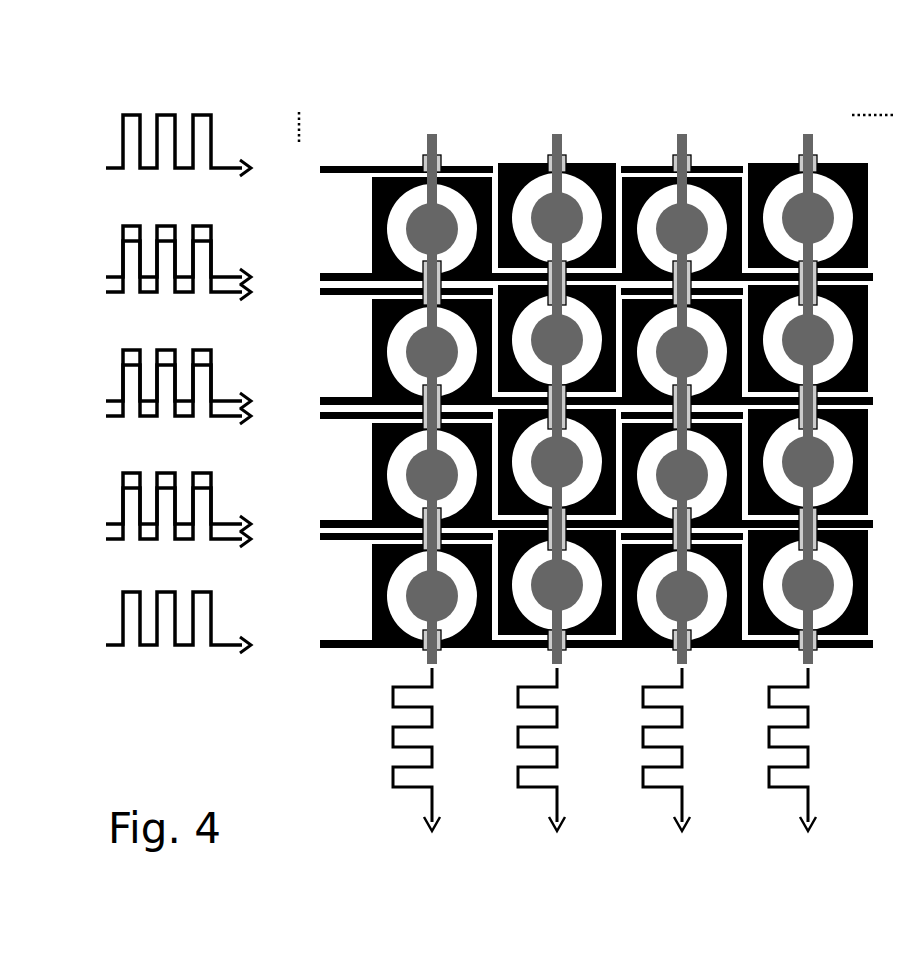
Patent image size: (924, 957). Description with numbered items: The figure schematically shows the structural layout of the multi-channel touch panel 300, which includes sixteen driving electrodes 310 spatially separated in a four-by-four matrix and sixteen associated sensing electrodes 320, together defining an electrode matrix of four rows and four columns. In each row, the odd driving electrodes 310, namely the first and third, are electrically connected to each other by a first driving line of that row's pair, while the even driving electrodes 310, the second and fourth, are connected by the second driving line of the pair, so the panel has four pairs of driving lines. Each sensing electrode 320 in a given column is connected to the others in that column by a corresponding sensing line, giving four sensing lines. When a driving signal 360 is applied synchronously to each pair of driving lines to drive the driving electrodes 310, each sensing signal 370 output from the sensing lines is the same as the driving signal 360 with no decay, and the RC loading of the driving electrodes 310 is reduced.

The multi-channel touch panel 300 is at (645, 68).
The driving electrode 310 is at (378, 641).
The sensing electrode 320 is at (431, 589).
The driving signal 360 is at (182, 647).
The sensing signal 370 is at (557, 802).